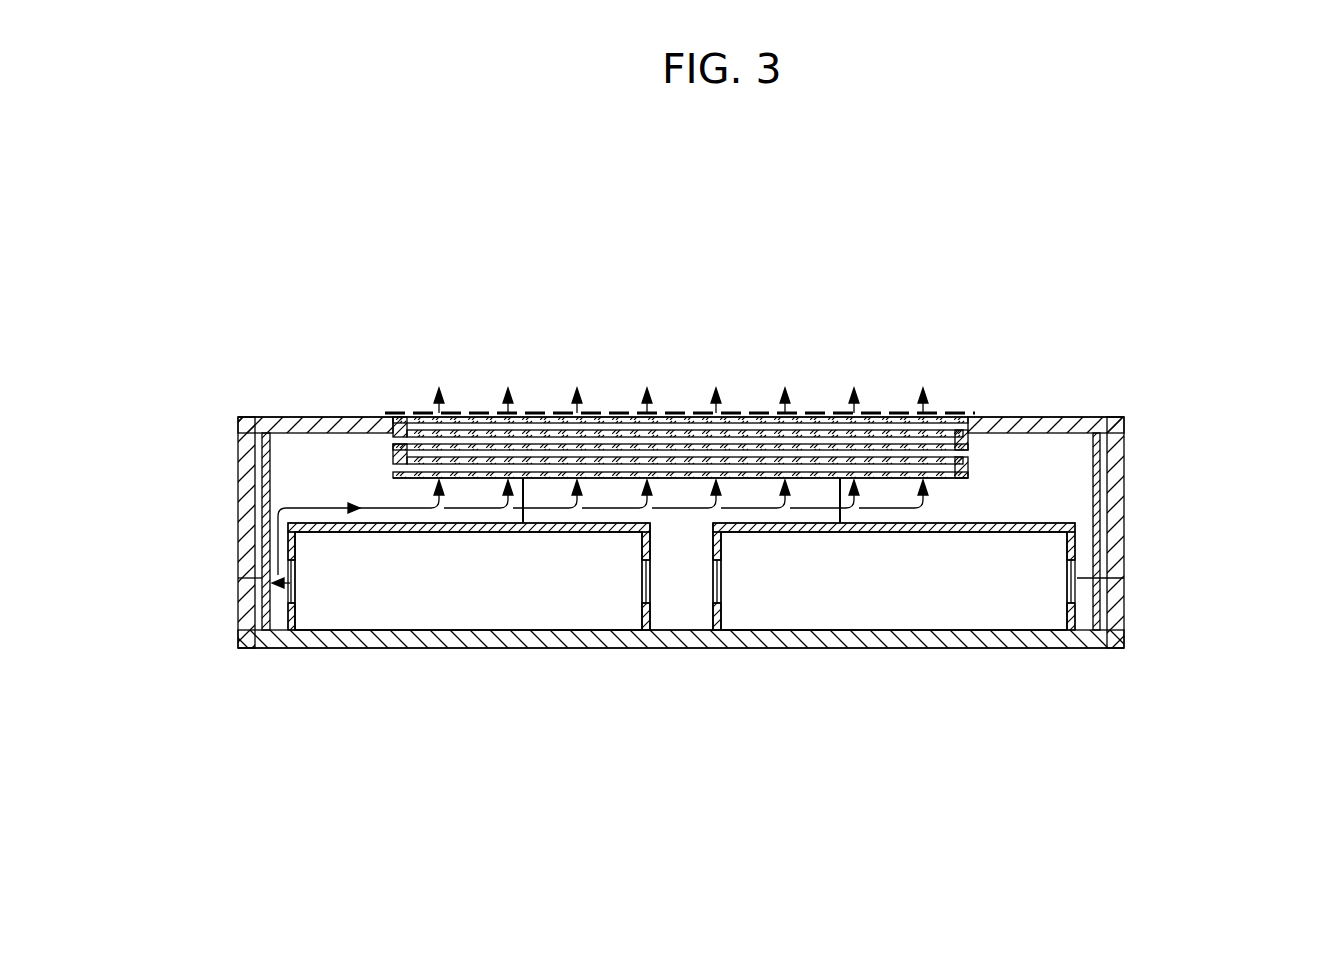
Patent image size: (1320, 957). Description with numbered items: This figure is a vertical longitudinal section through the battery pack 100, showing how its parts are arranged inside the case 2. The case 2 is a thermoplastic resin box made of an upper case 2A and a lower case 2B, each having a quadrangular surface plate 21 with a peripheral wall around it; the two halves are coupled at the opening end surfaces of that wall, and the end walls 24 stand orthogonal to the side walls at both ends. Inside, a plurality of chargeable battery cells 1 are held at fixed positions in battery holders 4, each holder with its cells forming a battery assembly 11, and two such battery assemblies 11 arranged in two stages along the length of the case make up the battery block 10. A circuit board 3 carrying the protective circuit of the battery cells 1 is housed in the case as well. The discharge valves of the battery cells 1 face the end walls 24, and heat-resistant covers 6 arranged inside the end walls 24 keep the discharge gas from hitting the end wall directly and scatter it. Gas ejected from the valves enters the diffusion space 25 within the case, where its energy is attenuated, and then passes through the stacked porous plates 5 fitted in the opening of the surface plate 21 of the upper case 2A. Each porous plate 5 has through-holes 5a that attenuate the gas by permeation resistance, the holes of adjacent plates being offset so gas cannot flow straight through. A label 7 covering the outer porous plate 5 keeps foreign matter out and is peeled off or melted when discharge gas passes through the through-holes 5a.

The battery pack 100 is at (1120, 200).
The case 2 is at (1158, 367).
The upper case 2A is at (1124, 256).
The lower case 2B is at (1124, 815).
The surface plate 21 is at (370, 420).
The end wall 24 is at (248, 490).
The diffusion space 25 is at (333, 490).
The heat-resistant cover 6 is at (271, 606).
The label 7 is at (610, 413).
The porous plate 5 is at (483, 413).
The through-hole 5a is at (748, 413).
The battery holder 4 is at (370, 528).
The battery cell 1 is at (487, 600).
The circuit board 3 is at (700, 572).
The battery block 10 is at (828, 723).
The battery assembly 11 is at (553, 630).